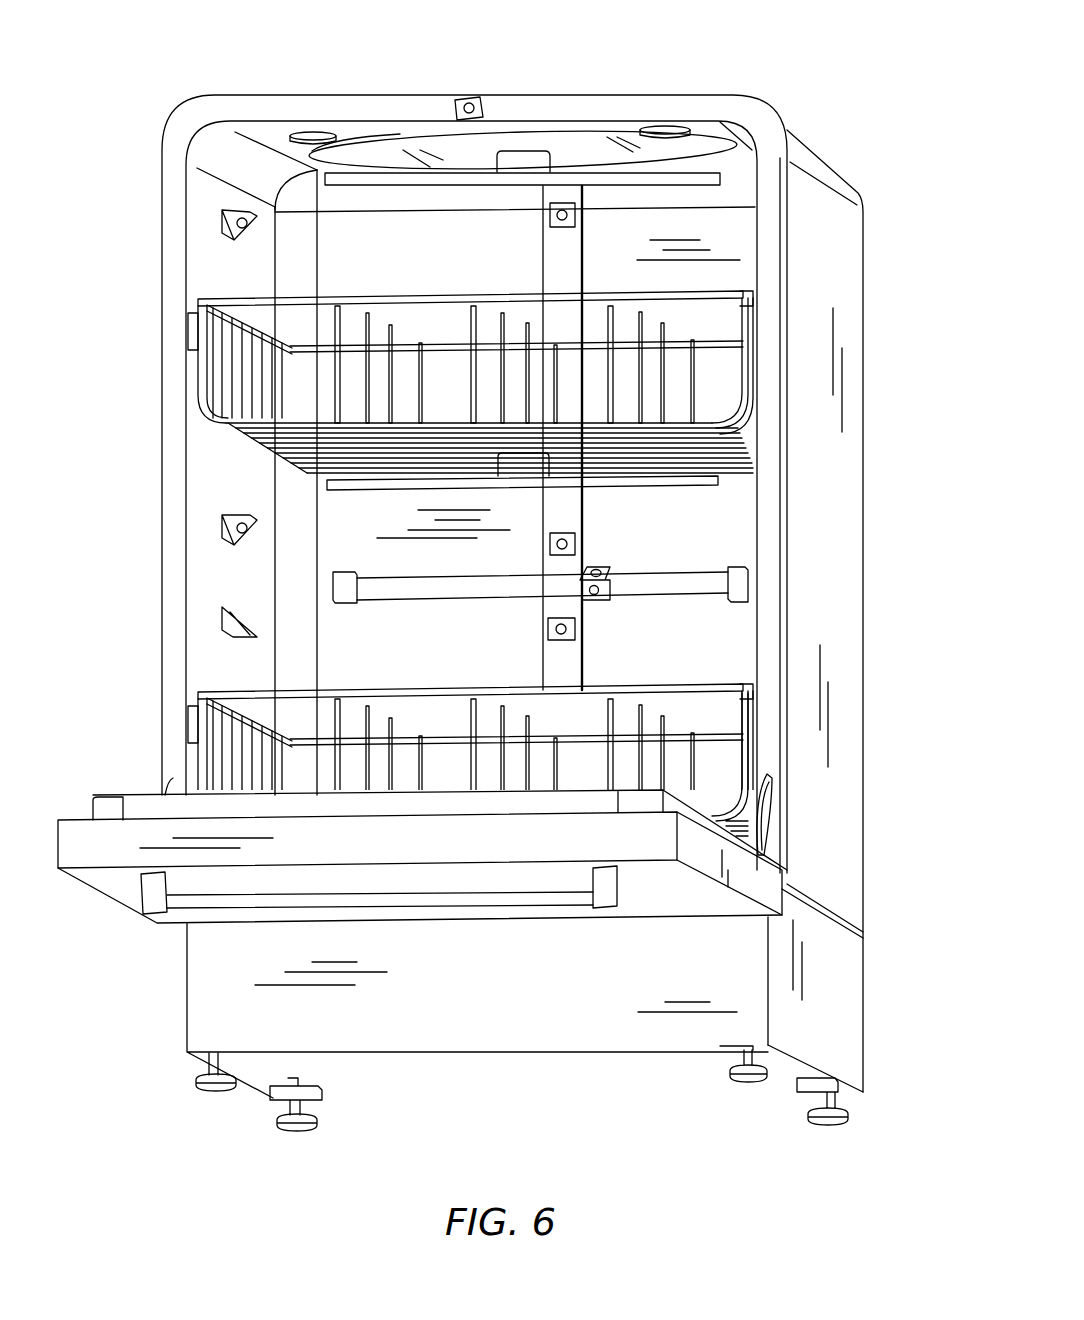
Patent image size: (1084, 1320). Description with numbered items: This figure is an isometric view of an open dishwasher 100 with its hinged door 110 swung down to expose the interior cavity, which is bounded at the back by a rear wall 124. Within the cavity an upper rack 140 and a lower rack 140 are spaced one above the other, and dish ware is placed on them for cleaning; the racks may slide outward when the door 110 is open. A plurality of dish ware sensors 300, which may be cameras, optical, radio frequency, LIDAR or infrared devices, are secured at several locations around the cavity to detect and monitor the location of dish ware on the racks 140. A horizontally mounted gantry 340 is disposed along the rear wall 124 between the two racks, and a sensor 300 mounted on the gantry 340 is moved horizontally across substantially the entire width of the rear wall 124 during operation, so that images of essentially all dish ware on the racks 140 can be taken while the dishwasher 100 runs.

The dishwasher 100 is at (808, 160).
The hinged door 110 is at (650, 852).
The rear wall 124 is at (713, 642).
The rack 140 is at (745, 365).
The dish ware sensor 300 is at (470, 95).
The gantry 340 is at (698, 583).